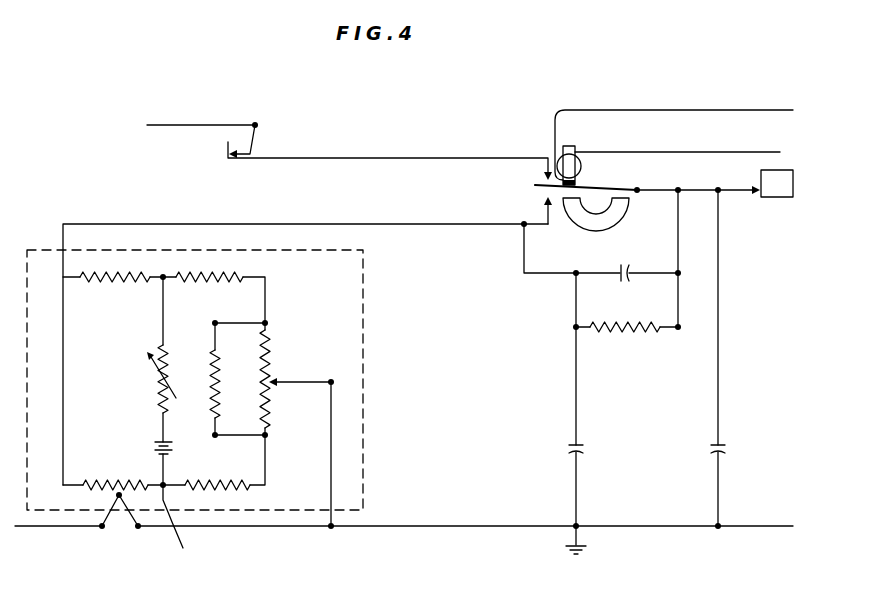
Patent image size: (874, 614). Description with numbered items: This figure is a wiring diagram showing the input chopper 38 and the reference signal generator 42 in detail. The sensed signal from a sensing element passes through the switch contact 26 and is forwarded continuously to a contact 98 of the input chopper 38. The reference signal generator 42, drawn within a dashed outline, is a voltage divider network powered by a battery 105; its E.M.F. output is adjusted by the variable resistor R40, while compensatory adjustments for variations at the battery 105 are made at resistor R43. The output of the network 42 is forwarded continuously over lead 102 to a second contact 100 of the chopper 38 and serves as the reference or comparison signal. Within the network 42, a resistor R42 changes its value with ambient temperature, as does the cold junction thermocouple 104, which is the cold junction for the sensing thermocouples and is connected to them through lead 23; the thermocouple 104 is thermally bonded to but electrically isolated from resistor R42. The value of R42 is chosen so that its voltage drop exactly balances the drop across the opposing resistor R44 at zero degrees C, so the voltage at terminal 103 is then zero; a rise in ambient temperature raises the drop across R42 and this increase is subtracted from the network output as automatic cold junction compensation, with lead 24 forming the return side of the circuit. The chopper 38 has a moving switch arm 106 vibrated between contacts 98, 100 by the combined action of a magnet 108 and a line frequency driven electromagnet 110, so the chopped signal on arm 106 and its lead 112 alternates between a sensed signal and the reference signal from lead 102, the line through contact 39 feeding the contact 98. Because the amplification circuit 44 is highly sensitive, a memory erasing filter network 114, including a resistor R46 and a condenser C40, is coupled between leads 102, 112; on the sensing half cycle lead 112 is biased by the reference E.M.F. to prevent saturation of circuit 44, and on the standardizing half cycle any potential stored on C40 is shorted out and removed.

The lead 23 is at (46, 529).
The common conductor 24 is at (397, 530).
The switch contact 26 is at (254, 141).
The input chopper 38 is at (543, 151).
The switch 39 is at (225, 159).
The reference signal generator 42 is at (336, 333).
The amplification circuit 44 is at (780, 198).
The contact 98 is at (535, 181).
The second contact 100 is at (540, 208).
The lead 102 is at (248, 224).
The terminal 103 is at (192, 525).
The cold junction thermocouple 104 is at (112, 530).
The battery 105 is at (156, 444).
The moving switch arm 106 is at (595, 185).
The magnet 108 is at (606, 228).
The electromagnet 110 is at (580, 148).
The lead 112 is at (733, 193).
The memory erasing filter network 114 is at (641, 315).
The variable resistor R40 is at (269, 353).
The resistor R42 is at (102, 479).
The resistor R43 is at (152, 384).
The opposing resistor R44 is at (226, 479).
The resistor R46 is at (623, 331).
The condenser C40 is at (633, 269).